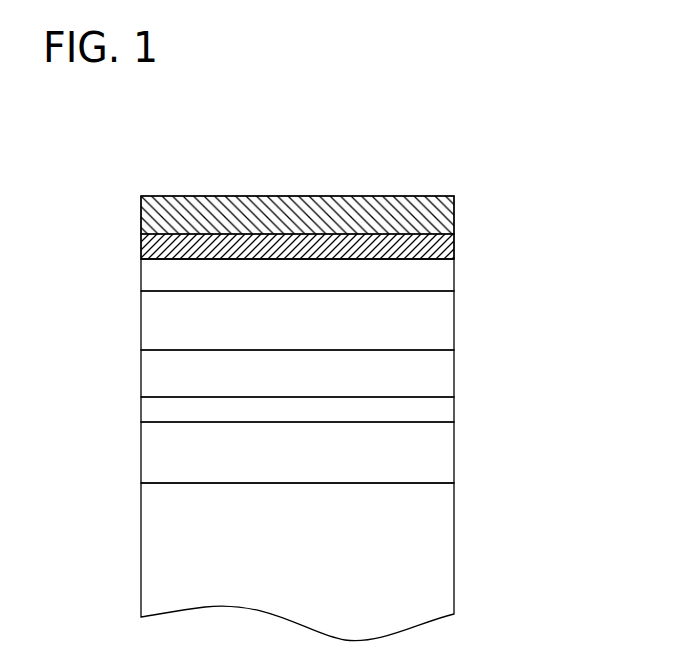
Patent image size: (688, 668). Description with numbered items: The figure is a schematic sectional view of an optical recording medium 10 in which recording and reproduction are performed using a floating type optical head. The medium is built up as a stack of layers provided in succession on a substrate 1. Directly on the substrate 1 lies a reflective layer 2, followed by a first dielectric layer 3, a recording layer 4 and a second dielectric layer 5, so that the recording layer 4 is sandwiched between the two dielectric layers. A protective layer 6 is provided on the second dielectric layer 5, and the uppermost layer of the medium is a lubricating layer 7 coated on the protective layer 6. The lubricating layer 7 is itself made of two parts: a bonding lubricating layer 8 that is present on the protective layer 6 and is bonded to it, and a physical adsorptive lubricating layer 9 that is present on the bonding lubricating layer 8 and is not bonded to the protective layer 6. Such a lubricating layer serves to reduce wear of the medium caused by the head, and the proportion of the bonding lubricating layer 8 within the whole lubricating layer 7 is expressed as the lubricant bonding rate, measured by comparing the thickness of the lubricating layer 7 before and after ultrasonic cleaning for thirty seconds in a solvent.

The substrate 1 is at (454, 548).
The reflective layer 2 is at (454, 457).
The first dielectric layer 3 is at (454, 408).
The recording layer 4 is at (454, 372).
The second dielectric layer 5 is at (454, 314).
The protective layer 6 is at (454, 275).
The lubricating layer 7 is at (133, 198).
The bonding lubricating layer 8 is at (454, 245).
The physical adsorptive lubricating layer 9 is at (454, 212).
The optical recording medium 10 is at (335, 348).